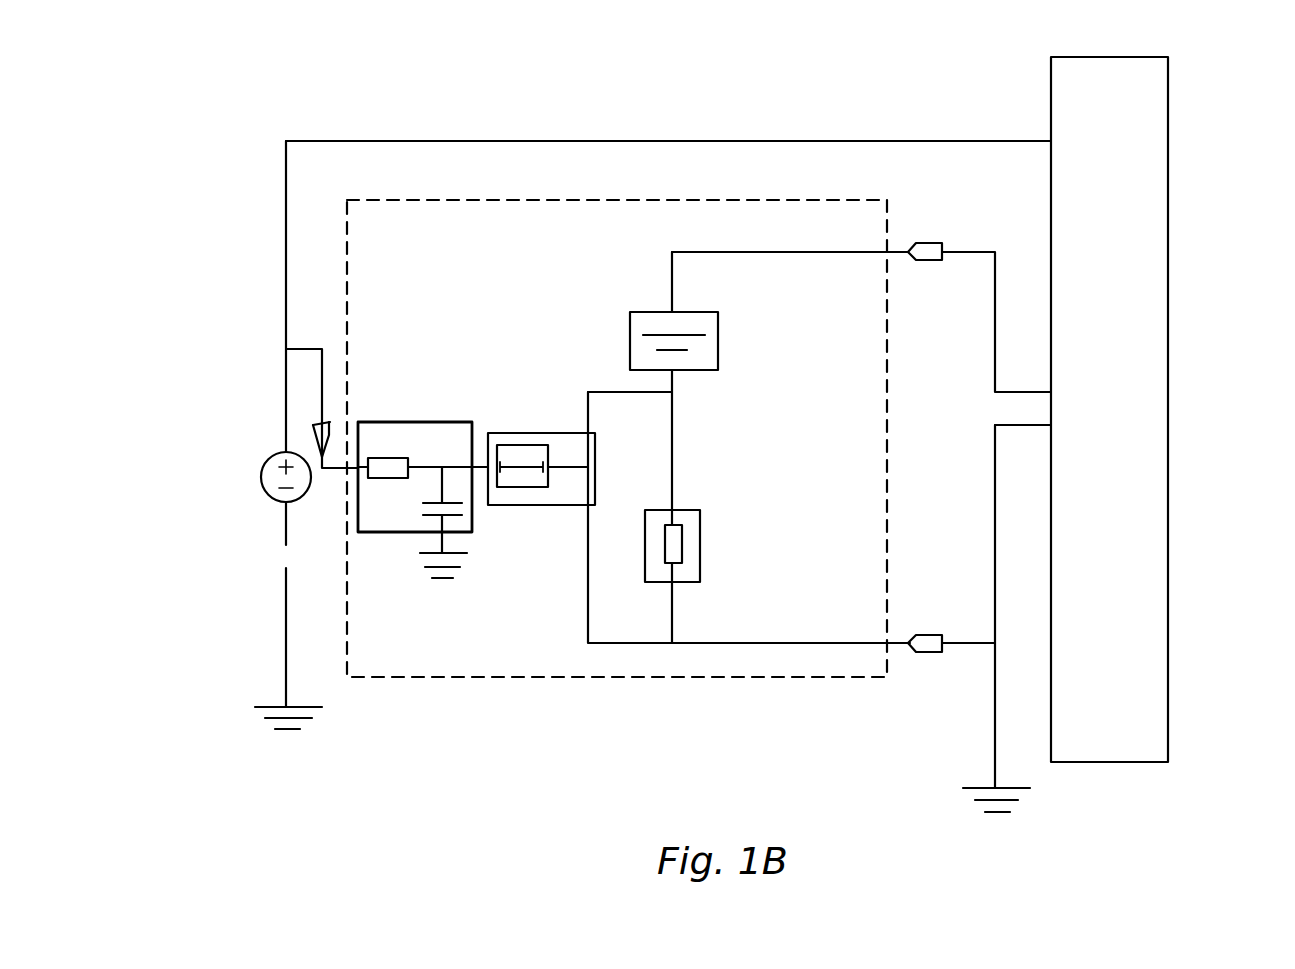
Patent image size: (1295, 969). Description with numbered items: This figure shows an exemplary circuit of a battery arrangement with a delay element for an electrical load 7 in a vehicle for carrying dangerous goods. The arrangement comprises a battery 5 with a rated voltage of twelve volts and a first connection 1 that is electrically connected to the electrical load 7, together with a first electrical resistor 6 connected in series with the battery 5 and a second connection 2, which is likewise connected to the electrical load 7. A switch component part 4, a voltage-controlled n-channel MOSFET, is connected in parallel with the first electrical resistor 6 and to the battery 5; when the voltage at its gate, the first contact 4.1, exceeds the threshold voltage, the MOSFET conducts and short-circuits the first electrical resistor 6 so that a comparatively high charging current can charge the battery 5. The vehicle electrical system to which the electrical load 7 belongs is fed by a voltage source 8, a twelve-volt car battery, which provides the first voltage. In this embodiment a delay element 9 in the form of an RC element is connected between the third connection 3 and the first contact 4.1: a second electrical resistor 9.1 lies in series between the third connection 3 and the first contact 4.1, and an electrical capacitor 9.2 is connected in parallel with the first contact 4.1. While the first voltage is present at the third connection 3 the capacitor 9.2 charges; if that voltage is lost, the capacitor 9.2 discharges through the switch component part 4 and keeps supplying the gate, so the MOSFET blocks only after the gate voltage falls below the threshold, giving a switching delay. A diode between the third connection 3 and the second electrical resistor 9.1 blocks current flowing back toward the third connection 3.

The first connection 1 is at (928, 243).
The second connection 2 is at (923, 648).
The third connection 3 is at (315, 423).
The switch component part 4 is at (508, 565).
The first contact 4.1 is at (487, 466).
The battery 5 is at (719, 344).
The first electrical resistor 6 is at (698, 552).
The electrical load 7 is at (1170, 430).
The voltage source 8 is at (276, 452).
The delay element 9 is at (316, 545).
The second electrical resistor 9.1 is at (362, 473).
The electrical capacitor 9.2 is at (423, 515).